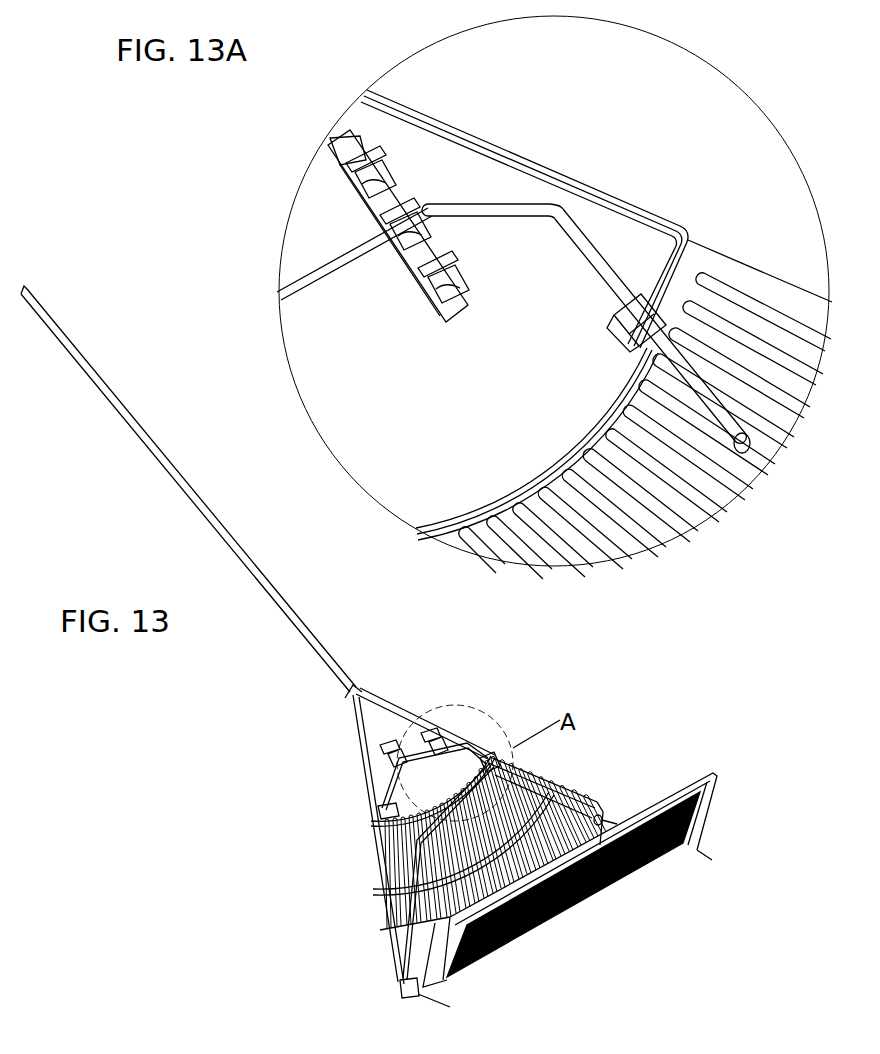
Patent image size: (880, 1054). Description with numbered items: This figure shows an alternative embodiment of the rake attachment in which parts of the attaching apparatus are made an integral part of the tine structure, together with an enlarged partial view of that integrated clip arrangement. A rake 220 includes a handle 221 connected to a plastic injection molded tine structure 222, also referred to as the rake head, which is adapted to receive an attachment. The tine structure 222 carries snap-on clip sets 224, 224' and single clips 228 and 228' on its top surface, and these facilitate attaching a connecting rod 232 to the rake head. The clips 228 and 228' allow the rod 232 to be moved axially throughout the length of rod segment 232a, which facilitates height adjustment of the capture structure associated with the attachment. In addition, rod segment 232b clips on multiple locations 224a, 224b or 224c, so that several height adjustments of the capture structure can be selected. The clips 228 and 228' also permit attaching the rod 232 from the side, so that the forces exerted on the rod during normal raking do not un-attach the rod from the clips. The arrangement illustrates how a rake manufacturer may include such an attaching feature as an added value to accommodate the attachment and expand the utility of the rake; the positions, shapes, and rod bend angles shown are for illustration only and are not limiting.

In FIG. 13, the handle 221 is at (303, 630).
In FIG. 13, the rake 220 is at (243, 788).
In FIG. 13A, the tine structure 222 is at (524, 153).
In FIG. 13, the tine structure 222 is at (370, 787).
In FIG. 13A, the snap-on clip set 224 is at (398, 194).
In FIG. 13, the snap-on clip set 224 is at (445, 708).
In FIG. 13A, the clip location 224a is at (353, 193).
In FIG. 13A, the clip location 224b is at (389, 280).
In FIG. 13A, the clip location 224c is at (437, 292).
In FIG. 13, the snap-on clip set 224' is at (357, 745).
In FIG. 13A, the single clip 228 is at (609, 323).
In FIG. 13, the single clip 228 is at (505, 730).
In FIG. 13, the single clip 228' is at (356, 813).
In FIG. 13, the connecting rod 232 is at (407, 940).
In FIG. 13A, the rod segment 232a is at (608, 258).
In FIG. 13, the rod segment 232a is at (410, 833).
In FIG. 13A, the rod segment 232b is at (325, 258).
In FIG. 13, the rod segment 232b is at (410, 760).